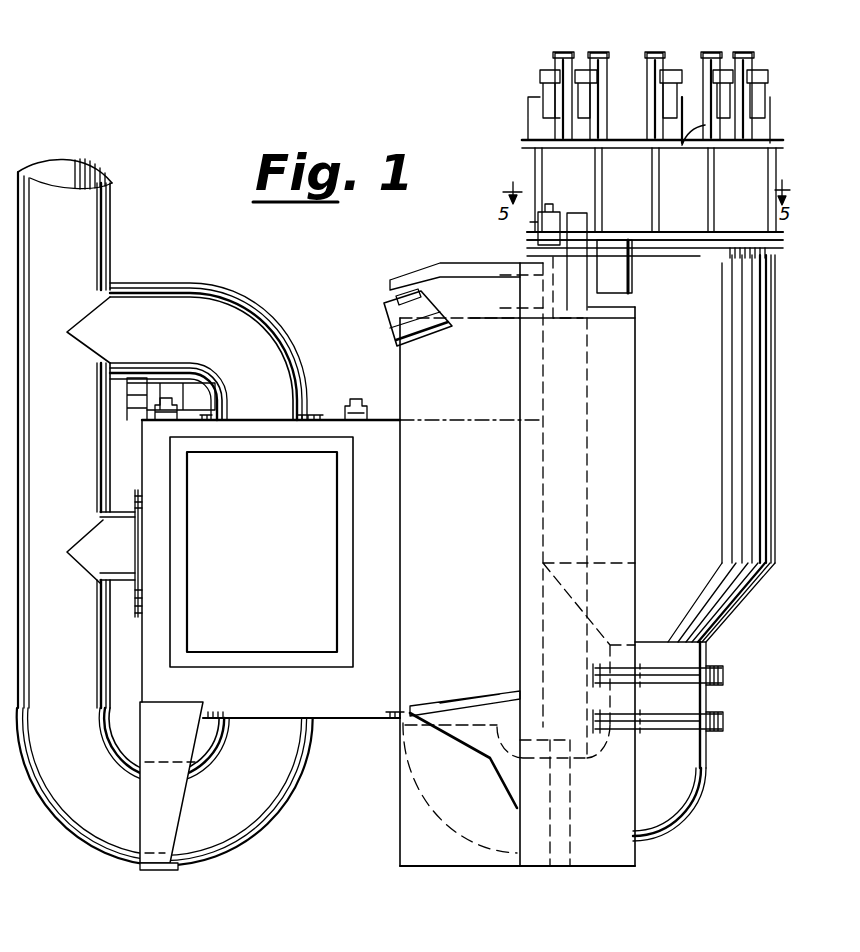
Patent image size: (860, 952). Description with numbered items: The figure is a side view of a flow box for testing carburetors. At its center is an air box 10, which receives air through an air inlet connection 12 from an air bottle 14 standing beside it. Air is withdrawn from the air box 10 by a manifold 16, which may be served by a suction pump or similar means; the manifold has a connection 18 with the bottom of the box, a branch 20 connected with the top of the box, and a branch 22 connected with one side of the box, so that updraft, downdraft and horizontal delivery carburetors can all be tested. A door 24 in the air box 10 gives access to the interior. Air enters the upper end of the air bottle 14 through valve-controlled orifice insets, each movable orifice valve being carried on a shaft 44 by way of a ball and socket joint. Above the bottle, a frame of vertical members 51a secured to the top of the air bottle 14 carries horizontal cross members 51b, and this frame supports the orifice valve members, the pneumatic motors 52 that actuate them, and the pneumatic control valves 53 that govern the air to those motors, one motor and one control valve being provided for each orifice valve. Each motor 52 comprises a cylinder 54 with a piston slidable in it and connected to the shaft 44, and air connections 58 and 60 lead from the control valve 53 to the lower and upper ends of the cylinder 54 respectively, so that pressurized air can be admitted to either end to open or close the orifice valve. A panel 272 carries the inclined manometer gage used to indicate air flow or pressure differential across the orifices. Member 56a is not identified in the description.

The air box 10 is at (360, 703).
The air inlet connection 12 is at (667, 790).
The air bottle 14 is at (742, 598).
The manifold 16 is at (100, 246).
The connection 18 is at (281, 807).
The branch 20 is at (240, 320).
The branch 22 is at (113, 570).
The door 24 is at (323, 492).
The shaft 44 is at (712, 181).
The vertical members 51a is at (535, 152).
The horizontal cross members 51b is at (642, 152).
The pneumatic motor 52 is at (652, 55).
The pneumatic control valve 53 is at (768, 68).
The cylinder 54 is at (650, 126).
The right support post 56a is at (773, 158).
The air connection 58 is at (690, 146).
The air connection 60 is at (597, 52).
The panel 272 is at (628, 480).